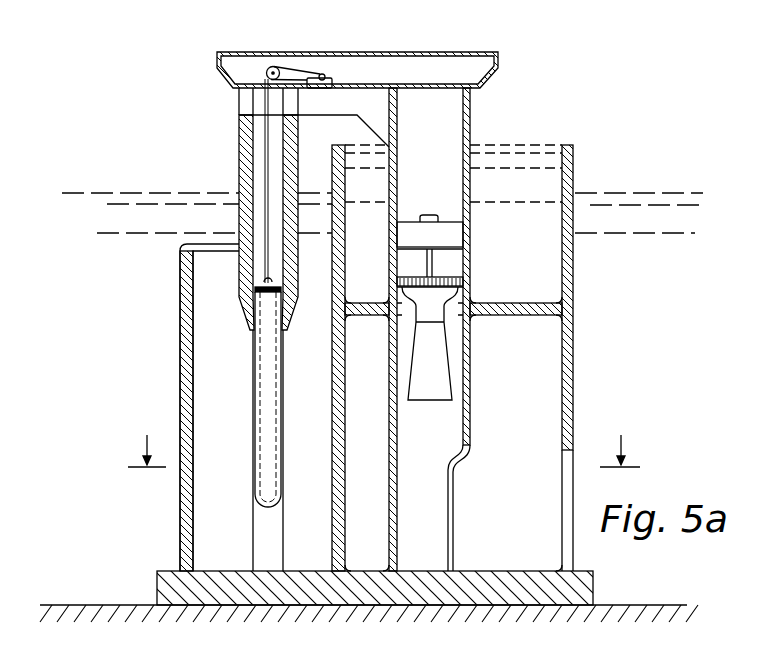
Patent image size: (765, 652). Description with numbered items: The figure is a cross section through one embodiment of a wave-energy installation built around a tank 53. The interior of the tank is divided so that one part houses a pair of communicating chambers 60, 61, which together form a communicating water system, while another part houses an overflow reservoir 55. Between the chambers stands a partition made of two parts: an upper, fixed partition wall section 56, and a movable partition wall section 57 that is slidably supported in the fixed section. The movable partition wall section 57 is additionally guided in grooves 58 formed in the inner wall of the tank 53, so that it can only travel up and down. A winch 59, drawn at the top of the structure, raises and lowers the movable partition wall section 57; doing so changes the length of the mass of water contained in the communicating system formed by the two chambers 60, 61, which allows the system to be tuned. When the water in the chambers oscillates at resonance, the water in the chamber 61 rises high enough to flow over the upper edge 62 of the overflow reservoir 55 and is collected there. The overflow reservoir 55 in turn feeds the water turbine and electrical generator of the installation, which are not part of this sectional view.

The tank 53 is at (573, 400).
The overflow reservoir 55 is at (548, 196).
The upper fixed partition wall section 56 is at (248, 147).
The movable partition wall section 57 is at (263, 373).
The grooves 58 is at (268, 541).
The winch 59 is at (325, 77).
The chamber 60 is at (215, 350).
The chamber 61 is at (300, 331).
The upper edge 62 is at (340, 145).